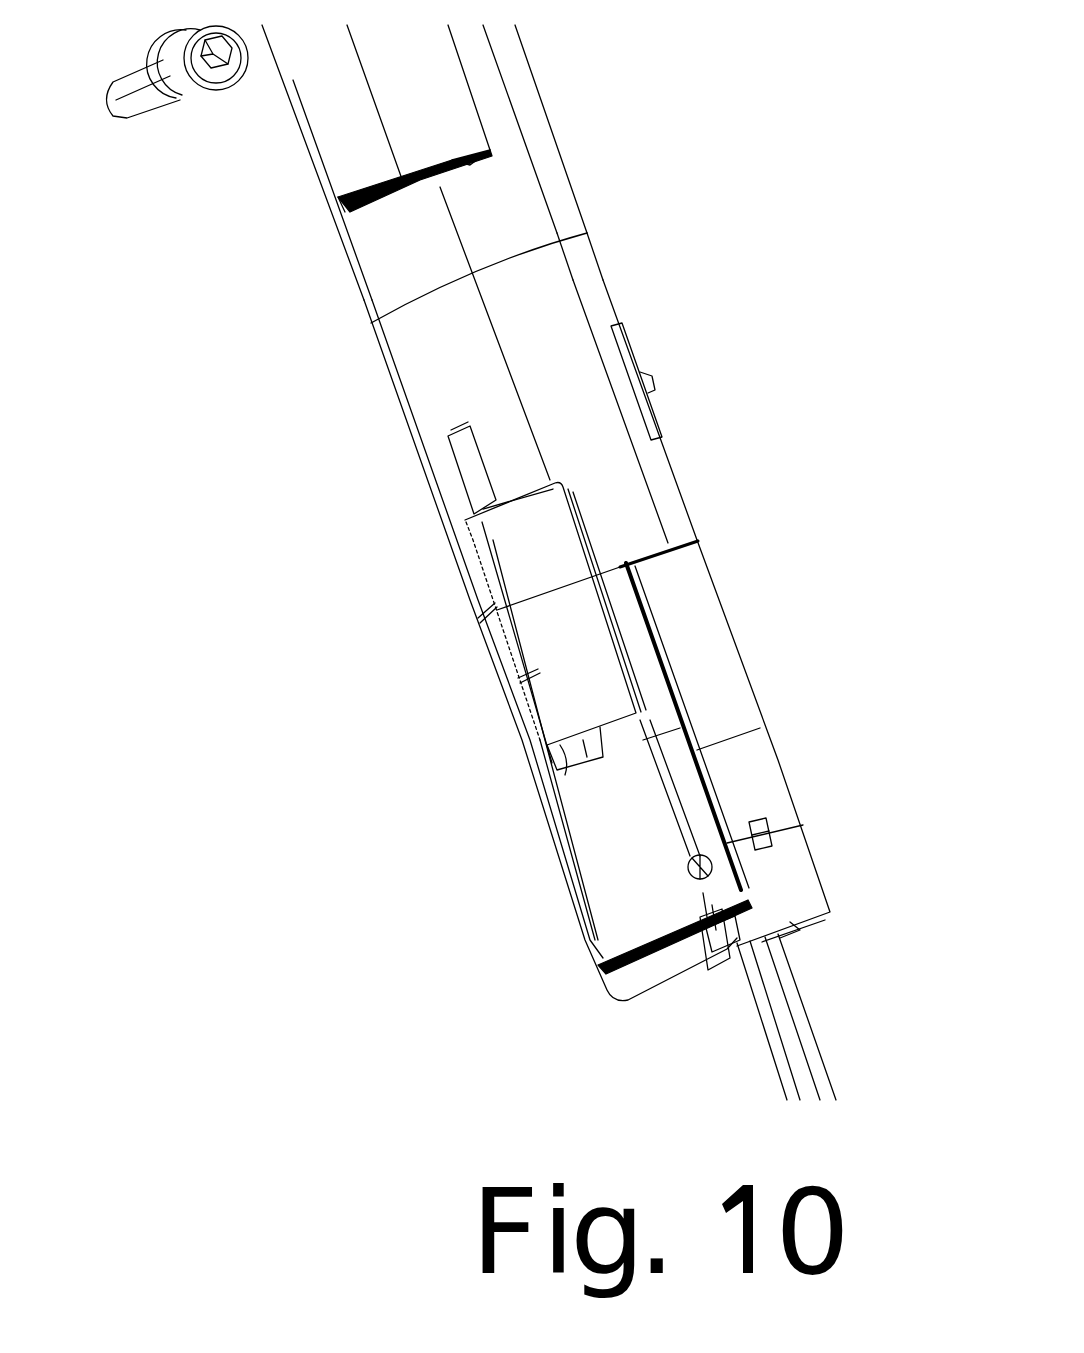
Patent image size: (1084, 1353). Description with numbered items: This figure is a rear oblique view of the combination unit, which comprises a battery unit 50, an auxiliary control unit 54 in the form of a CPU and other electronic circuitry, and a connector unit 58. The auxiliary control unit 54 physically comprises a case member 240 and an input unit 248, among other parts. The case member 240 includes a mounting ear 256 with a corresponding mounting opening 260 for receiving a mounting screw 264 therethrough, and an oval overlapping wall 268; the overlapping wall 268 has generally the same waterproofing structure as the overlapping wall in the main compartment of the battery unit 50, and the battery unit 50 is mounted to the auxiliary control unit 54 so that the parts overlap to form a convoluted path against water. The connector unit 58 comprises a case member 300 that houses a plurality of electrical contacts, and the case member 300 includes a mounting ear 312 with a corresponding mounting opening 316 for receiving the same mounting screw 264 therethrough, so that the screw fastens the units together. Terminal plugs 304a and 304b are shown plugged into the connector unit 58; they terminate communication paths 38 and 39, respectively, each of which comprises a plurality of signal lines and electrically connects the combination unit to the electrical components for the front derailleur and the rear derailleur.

The battery unit 50 is at (590, 140).
The auxiliary control unit 54 is at (633, 275).
The case member 240 is at (418, 375).
The input unit 248 is at (666, 384).
The mounting screw 264 is at (478, 435).
The mounting opening 260 is at (480, 508).
The overlapping wall 268 is at (673, 503).
The mounting ear 256 is at (520, 562).
The connector unit 58 is at (771, 640).
The mounting ear 312 is at (562, 673).
The case member 300 is at (740, 713).
The mounting opening 316 is at (560, 773).
The terminal plug 304a is at (763, 935).
The terminal plug 304b is at (710, 972).
The communication path 38 is at (817, 1035).
The communication path 39 is at (770, 1055).